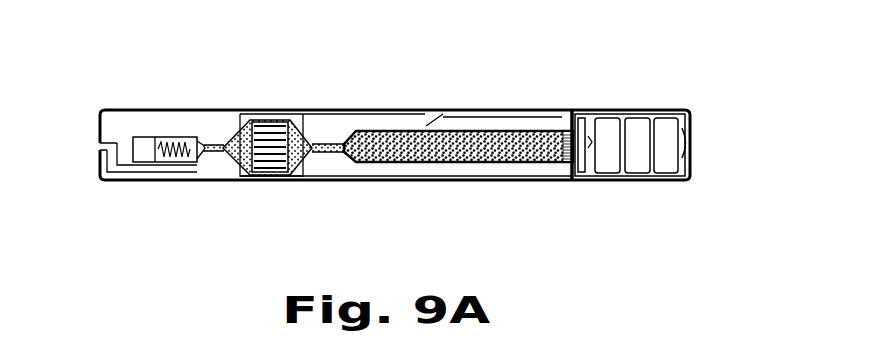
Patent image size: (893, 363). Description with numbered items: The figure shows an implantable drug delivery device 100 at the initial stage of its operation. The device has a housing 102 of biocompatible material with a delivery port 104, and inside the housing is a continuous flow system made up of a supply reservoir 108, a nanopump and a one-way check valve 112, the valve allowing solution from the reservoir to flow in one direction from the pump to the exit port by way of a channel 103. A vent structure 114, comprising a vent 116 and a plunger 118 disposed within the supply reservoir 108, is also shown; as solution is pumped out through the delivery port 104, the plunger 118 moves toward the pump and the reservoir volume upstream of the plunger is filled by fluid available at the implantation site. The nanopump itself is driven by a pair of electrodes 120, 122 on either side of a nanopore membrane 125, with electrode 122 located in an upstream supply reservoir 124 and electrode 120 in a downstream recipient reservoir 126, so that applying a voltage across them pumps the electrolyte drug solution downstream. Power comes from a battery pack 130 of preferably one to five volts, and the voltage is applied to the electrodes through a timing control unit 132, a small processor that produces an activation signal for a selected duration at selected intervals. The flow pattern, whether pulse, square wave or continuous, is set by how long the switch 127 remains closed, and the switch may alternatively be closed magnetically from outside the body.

The implantable drug delivery device 100 is at (662, 103).
The housing 102 is at (176, 172).
The channel 103 is at (139, 170).
The delivery port 104 is at (100, 152).
The supply reservoir 108 is at (444, 165).
The one-way check valve 112 is at (163, 135).
The vent structure 114 is at (565, 118).
The vent 116 is at (570, 112).
The plunger 118 is at (572, 170).
The electrode 120 is at (233, 117).
The electrode 122 is at (312, 116).
The upstream supply reservoir 124 is at (300, 117).
The nanopore membrane 125 is at (279, 166).
The downstream recipient reservoir 126 is at (240, 165).
The switch 127 is at (426, 126).
The battery pack 130 is at (648, 180).
The timing control unit 132 is at (690, 143).